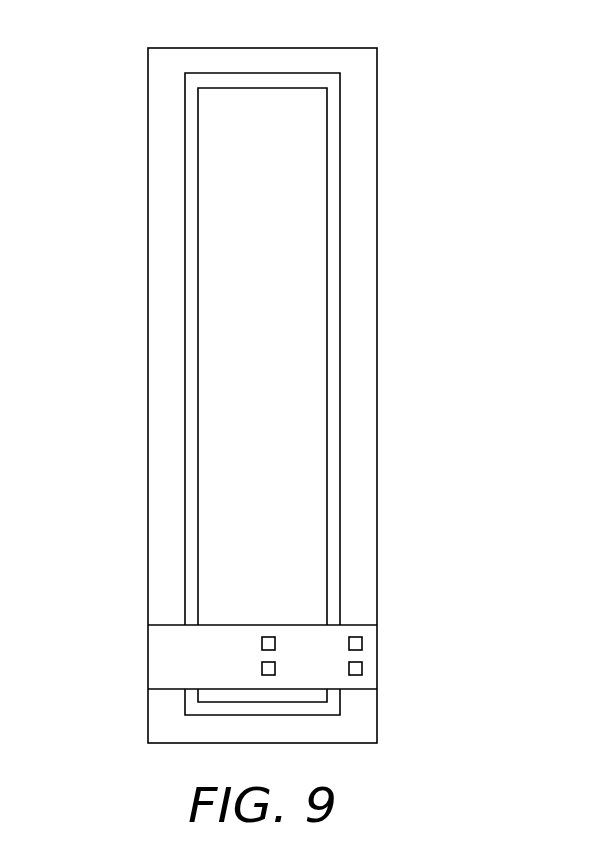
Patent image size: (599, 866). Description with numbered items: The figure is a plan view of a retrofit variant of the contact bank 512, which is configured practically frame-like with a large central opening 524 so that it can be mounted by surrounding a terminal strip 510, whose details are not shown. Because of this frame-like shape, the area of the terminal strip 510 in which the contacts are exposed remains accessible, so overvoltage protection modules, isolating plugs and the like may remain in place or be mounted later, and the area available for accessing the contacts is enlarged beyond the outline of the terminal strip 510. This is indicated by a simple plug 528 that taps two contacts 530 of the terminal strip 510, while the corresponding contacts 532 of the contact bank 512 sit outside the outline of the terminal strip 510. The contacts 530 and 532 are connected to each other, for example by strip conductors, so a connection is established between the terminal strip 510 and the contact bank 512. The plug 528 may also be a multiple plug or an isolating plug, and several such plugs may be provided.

The contact bank 512 is at (167, 387).
The terminal strip 510 is at (305, 497).
The central opening 524 is at (220, 122).
The plug 528 is at (310, 653).
The contacts of the terminal strip 530 is at (262, 642).
The contacts of the contact bank 532 is at (362, 643).